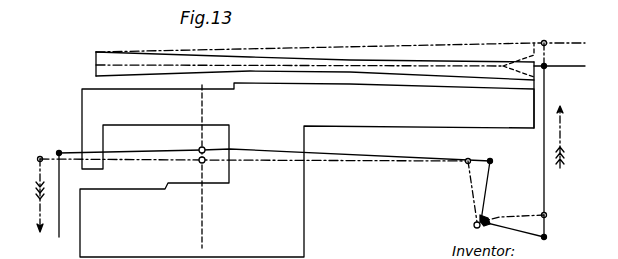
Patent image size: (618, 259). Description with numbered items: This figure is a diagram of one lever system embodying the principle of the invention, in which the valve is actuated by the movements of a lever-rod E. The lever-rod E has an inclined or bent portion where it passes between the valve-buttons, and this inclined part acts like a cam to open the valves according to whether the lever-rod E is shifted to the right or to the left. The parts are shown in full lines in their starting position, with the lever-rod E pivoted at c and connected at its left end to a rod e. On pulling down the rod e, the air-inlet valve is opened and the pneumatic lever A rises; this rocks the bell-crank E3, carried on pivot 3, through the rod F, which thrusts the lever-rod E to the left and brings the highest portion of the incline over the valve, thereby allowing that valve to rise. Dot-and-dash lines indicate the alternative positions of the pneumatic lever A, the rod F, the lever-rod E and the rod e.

The pneumatic lever A is at (491, 46).
The lever-rod E is at (266, 151).
The bell-crank E3 is at (488, 184).
The rod F is at (544, 188).
The pivot c is at (206, 159).
The rod e is at (52, 194).
The pivot 3 is at (474, 226).